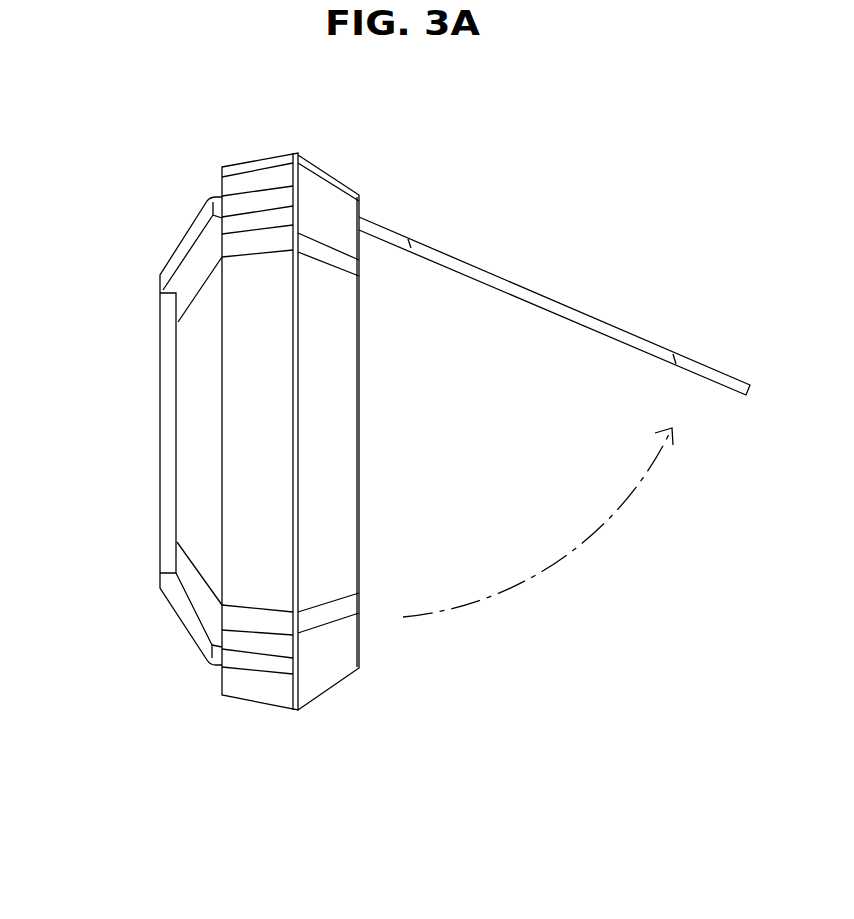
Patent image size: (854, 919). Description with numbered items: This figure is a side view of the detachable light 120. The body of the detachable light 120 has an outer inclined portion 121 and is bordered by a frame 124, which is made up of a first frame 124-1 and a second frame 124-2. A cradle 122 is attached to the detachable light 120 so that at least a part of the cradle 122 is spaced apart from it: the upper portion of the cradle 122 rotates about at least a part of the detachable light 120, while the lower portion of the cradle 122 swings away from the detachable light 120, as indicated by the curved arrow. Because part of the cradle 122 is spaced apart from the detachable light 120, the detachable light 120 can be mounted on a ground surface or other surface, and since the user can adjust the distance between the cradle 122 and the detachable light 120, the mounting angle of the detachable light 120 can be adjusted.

The detachable light 120 is at (512, 139).
The outer inclined portion 121 is at (332, 663).
The cradle 122 is at (575, 309).
The frame 124 is at (655, 713).
The first frame 124-1 is at (200, 597).
The second frame 124-2 is at (168, 405).